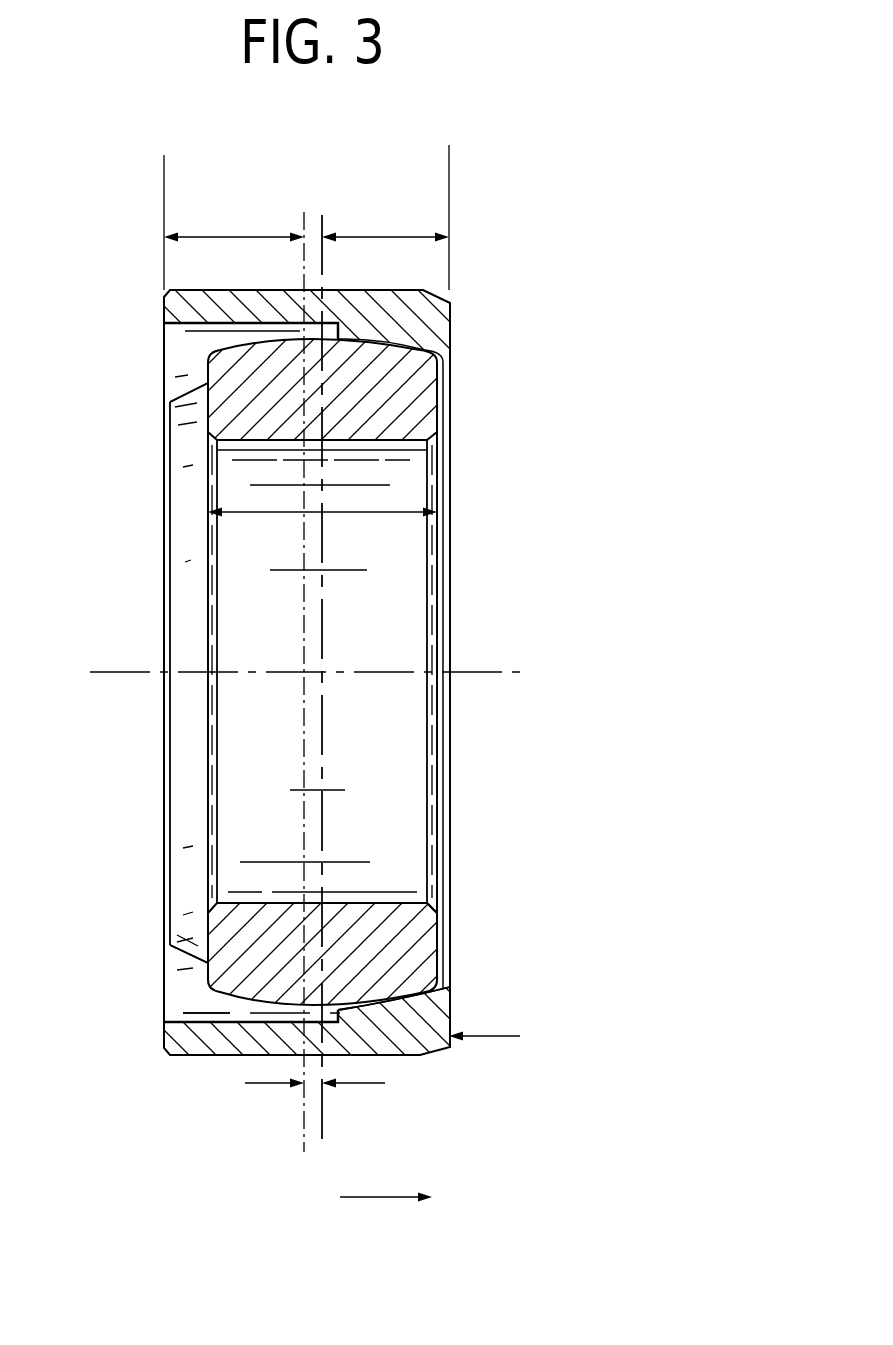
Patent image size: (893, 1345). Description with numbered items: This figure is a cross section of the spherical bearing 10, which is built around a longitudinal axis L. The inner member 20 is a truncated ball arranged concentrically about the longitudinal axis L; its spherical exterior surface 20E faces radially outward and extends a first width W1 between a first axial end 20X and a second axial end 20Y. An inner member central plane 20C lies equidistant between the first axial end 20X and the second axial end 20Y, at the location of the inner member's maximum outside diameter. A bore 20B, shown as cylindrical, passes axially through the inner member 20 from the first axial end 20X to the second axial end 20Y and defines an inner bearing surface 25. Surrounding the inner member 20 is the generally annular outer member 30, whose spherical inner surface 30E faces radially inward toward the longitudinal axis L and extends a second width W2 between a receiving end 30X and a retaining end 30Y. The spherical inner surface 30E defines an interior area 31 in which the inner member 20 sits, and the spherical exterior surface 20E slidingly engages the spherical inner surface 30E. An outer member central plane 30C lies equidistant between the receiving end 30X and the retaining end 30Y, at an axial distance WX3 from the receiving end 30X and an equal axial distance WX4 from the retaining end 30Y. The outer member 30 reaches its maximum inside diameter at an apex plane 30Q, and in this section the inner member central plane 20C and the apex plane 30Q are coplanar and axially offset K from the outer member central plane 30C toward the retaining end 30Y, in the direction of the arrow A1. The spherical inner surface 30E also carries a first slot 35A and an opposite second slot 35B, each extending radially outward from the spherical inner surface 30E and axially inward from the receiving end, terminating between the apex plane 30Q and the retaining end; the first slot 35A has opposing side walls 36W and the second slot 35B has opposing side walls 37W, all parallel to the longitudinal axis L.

The spherical bearing 10 is at (500, 142).
The inner member 20 is at (385, 386).
The bore 20B is at (375, 752).
The inner member central plane 20C is at (322, 1120).
The spherical exterior surface 20E is at (213, 334).
The first axial end 20X is at (207, 423).
The second axial end 20Y is at (440, 413).
The inner bearing surface 25 is at (372, 903).
The outer member 30 is at (390, 313).
The outer member central plane 30C is at (304, 1118).
The spherical inner surface 30E is at (385, 1003).
The apex plane 30Q is at (403, 691).
The receiving end 30X is at (162, 1042).
The retaining end 30Y is at (448, 1012).
The interior area 31 is at (226, 1013).
The first slot 35A is at (182, 365).
The second slot 35B is at (170, 973).
The opposing side walls 36W is at (193, 356).
The opposing side walls 37W is at (191, 1005).
The first width W1 is at (367, 512).
The second width W2 is at (510, 1040).
The axial distance WX3 is at (234, 222).
The axial distance WX4 is at (385, 217).
The axial offset K is at (360, 1083).
The longitudinal axis L is at (485, 671).
The arrow A1 is at (370, 1197).